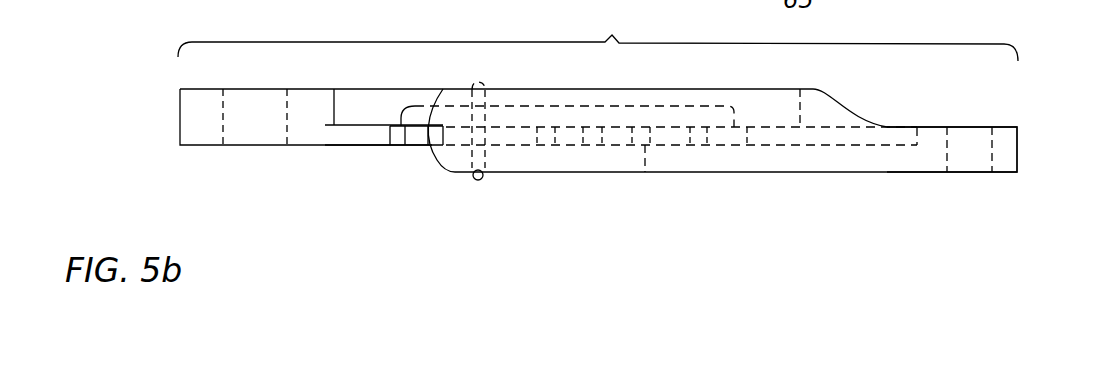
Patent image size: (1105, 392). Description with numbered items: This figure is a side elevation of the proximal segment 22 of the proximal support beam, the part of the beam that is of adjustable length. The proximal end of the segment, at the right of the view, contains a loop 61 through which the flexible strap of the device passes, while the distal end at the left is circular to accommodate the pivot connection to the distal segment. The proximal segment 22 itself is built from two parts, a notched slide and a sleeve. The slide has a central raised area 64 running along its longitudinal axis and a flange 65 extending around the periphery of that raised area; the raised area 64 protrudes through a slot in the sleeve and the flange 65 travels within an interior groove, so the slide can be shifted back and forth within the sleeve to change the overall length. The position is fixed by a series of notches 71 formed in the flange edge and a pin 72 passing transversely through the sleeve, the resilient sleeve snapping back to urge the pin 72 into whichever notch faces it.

The proximal segment 22 is at (621, 42).
The loop 61 is at (1005, 154).
The central raised area 64 is at (352, 111).
The flange 65 is at (367, 137).
The notches 71 is at (436, 133).
The pin 72 is at (478, 180).